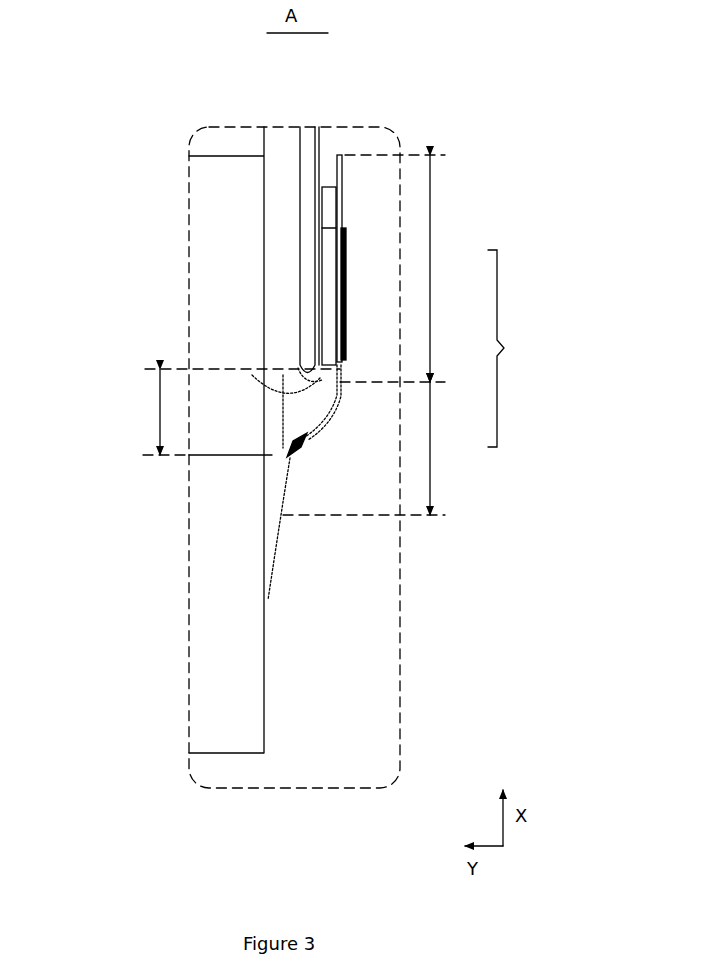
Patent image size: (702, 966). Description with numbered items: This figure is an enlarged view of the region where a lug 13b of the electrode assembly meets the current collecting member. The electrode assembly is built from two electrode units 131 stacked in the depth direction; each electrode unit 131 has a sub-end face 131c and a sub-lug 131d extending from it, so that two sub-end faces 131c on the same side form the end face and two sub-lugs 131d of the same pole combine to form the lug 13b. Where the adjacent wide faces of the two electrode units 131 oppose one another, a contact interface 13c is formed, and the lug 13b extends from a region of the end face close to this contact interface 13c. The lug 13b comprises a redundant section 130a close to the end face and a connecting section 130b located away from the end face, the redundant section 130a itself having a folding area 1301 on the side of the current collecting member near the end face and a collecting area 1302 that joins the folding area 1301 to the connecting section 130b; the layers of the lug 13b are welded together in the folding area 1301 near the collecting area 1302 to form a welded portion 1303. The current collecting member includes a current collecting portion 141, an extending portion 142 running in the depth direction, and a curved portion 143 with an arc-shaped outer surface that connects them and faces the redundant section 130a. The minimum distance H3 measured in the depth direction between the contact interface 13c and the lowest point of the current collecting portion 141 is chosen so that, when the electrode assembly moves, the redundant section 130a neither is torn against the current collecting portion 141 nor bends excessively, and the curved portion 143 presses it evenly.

The electrode unit 131 is at (222, 226).
The sub-end face 131c is at (278, 258).
The sub-lug 131d is at (272, 338).
The curved portion 143 is at (252, 375).
The contact interface 13c is at (225, 458).
The current collecting portion 141 is at (328, 256).
The extending portion 142 is at (312, 150).
The folding area 1301 is at (290, 470).
The collecting area 1302 is at (338, 403).
The welded portion 1303 is at (303, 450).
The redundant section 130a is at (386, 448).
The connecting section 130b is at (414, 268).
The lug 13b is at (367, 457).
The minimum distance H3 is at (232, 412).